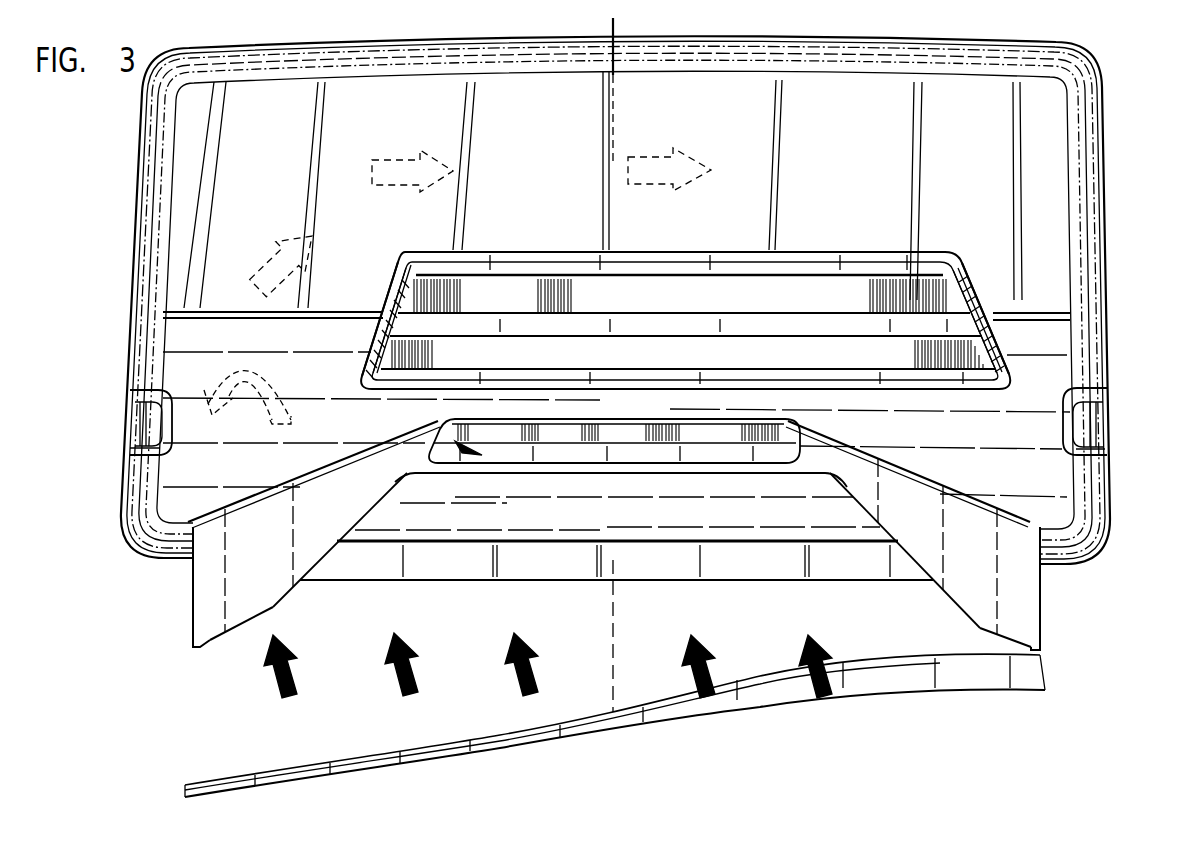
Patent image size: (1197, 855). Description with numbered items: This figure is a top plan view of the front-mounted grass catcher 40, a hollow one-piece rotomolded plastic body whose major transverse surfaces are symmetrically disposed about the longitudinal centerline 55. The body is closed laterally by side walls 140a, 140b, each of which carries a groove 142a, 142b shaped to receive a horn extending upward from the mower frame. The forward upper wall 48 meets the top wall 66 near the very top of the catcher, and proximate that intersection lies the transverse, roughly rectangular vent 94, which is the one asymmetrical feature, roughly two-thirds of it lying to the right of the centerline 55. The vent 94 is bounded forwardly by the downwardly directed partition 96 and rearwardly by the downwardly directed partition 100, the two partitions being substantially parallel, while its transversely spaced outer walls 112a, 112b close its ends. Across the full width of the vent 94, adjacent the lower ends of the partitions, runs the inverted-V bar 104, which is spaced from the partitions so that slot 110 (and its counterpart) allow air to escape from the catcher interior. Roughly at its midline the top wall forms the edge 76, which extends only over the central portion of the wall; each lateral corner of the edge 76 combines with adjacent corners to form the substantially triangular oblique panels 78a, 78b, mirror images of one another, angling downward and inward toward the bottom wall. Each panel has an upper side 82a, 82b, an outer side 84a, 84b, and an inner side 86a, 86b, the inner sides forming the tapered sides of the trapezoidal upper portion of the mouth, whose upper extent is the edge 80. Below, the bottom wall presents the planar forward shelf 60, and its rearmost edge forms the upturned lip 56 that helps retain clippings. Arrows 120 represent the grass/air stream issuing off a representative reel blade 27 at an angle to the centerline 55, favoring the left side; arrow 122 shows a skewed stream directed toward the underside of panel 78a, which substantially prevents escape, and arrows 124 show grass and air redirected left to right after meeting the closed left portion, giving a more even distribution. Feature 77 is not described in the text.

The catcher 40 is at (1103, 84).
The top wall 66 is at (872, 46).
The side wall 140a is at (132, 235).
The side wall 140b is at (1109, 330).
The forward upper wall 48 is at (708, 107).
The longitudinal centerline 55 is at (611, 66).
The arrows 124 is at (428, 150).
The arrow 122 is at (265, 414).
The partition 100 is at (795, 352).
The partition 96 is at (742, 264).
The wall 112a is at (397, 277).
The wall 112b is at (963, 297).
The bar 104 is at (698, 306).
The slot 110 is at (672, 364).
The vent 94 is at (558, 296).
The edge 76 is at (667, 420).
The edge 80 is at (612, 472).
The air flow into lower duct 77 is at (456, 442).
The upper side 82a is at (296, 488).
The upper side 82b is at (940, 489).
The triangular panel 78a is at (280, 552).
The triangular panel 78b is at (997, 561).
The outer side 84a is at (190, 601).
The outer side 84b is at (1042, 607).
The inner side 86a is at (268, 604).
The inner side 86b is at (950, 601).
The forward shelf 60 is at (603, 526).
The upturned lip 56 is at (706, 582).
The arrows 120 is at (293, 671).
The reel blade 27 is at (497, 735).
The groove 142a is at (120, 422).
The groove 142b is at (1124, 421).